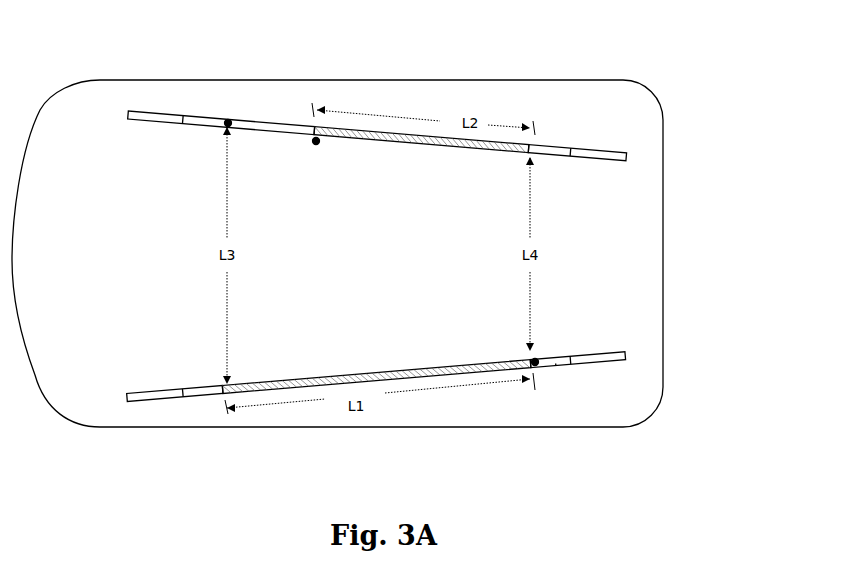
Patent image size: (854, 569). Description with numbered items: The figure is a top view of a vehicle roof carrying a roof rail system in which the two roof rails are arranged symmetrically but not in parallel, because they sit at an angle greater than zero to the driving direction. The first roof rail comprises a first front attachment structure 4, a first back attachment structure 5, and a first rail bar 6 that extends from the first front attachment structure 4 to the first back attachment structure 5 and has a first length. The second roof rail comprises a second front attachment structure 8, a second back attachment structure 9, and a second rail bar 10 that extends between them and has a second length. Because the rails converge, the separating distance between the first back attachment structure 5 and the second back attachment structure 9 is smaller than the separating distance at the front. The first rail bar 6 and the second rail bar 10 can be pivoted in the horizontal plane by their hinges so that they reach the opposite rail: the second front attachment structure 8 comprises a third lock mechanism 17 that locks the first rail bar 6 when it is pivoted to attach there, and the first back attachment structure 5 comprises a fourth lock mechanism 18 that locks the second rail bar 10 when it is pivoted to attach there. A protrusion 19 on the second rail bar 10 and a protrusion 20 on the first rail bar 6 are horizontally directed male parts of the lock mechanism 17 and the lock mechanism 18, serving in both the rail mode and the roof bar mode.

The first front attachment structure 4 is at (212, 389).
The first back attachment structure 5 is at (548, 360).
The first rail bar 6 is at (395, 379).
The second front attachment structure 8 is at (197, 121).
The second back attachment structure 9 is at (553, 157).
The second rail bar 10 is at (420, 140).
The third lock mechanism 17 is at (228, 118).
The fourth lock mechanism 18 is at (557, 372).
The protrusion 19 is at (316, 144).
The protrusion 20 is at (528, 353).